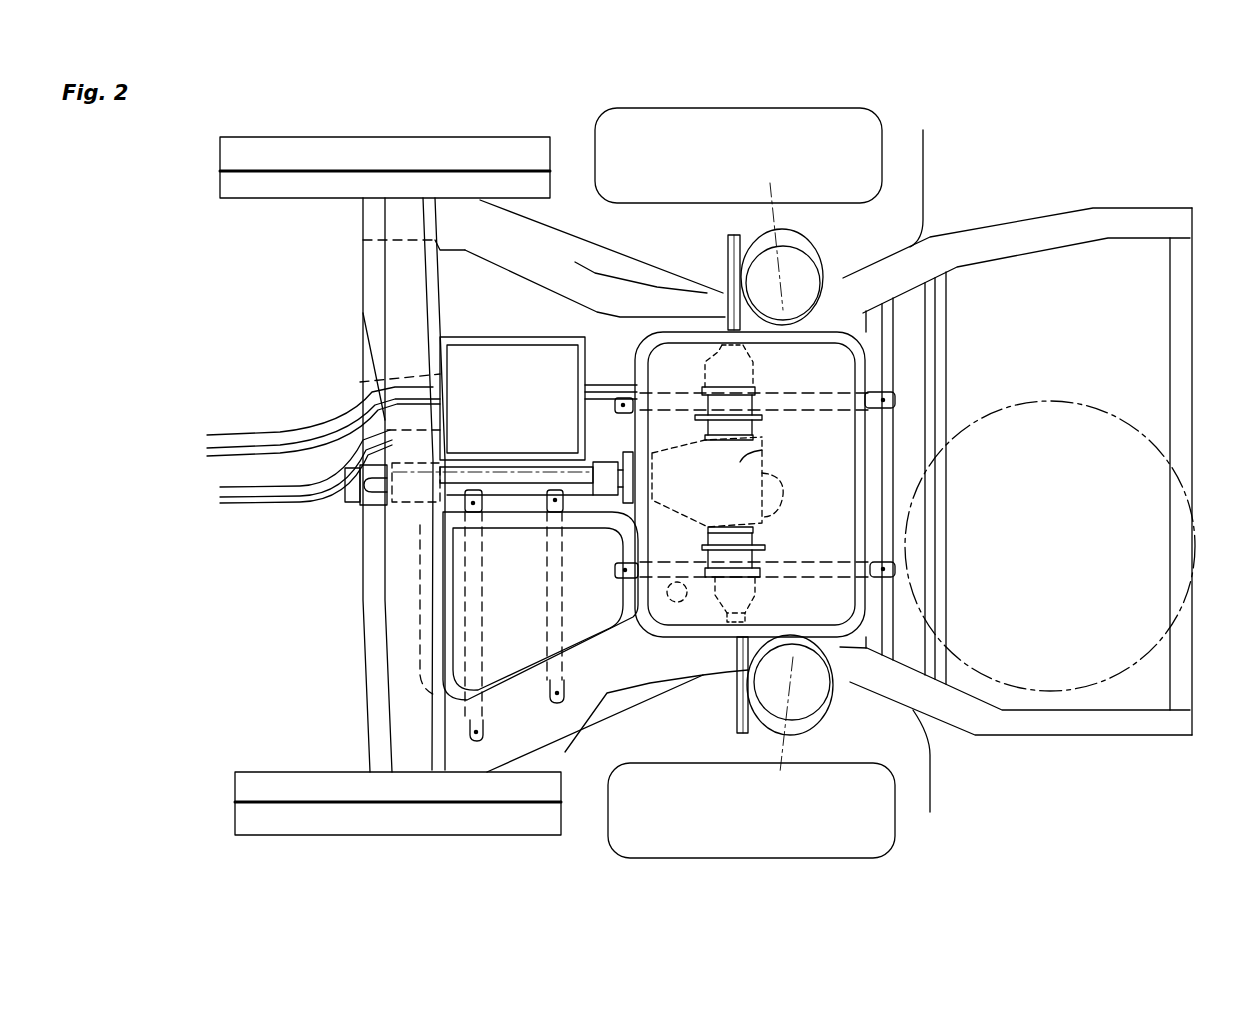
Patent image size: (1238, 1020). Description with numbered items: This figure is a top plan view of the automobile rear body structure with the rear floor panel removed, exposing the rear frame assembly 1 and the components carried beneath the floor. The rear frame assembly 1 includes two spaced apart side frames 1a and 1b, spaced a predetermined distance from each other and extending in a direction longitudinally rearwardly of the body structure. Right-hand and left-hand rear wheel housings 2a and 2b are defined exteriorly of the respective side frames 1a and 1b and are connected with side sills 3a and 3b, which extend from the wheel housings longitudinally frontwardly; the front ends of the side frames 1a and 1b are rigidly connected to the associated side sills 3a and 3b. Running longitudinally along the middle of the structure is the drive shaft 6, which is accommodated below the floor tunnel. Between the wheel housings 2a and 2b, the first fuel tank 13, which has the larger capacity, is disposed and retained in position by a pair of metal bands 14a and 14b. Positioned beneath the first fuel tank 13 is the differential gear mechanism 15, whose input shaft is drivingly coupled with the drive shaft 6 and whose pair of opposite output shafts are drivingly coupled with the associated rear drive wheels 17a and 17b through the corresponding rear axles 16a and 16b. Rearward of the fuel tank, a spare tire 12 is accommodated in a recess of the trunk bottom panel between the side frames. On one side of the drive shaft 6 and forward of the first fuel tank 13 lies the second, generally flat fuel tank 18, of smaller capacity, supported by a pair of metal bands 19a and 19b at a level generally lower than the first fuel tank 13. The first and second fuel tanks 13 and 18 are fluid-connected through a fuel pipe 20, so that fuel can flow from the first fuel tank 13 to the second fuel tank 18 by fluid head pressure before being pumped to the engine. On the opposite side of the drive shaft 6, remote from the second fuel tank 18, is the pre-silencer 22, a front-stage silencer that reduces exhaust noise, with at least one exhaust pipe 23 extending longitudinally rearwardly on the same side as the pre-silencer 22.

The rear frame assembly 1 is at (1133, 198).
The side frame 1a is at (1000, 238).
The side frame 1b is at (1018, 728).
The rear wheel housing 2a is at (557, 233).
The rear wheel housing 2b is at (600, 745).
The side sill 3a is at (447, 137).
The side sill 3b is at (426, 838).
The drive shaft 6 is at (453, 480).
The spare tire 12 is at (1102, 683).
The first fuel tank 13 is at (823, 363).
The metal band 14a is at (880, 387).
The metal band 14b is at (880, 577).
The differential gear mechanism 15 is at (760, 455).
The rear axle 16a is at (727, 263).
The rear axle 16b is at (735, 690).
The rear drive wheel 17a is at (693, 132).
The rear drive wheel 17b is at (716, 848).
The second fuel tank 18 is at (512, 650).
The metal band 19a is at (483, 745).
The metal band 19b is at (548, 672).
The fuel pipe 20 is at (657, 603).
The pre-silencer 22 is at (497, 358).
The exhaust pipe 23 is at (313, 430).